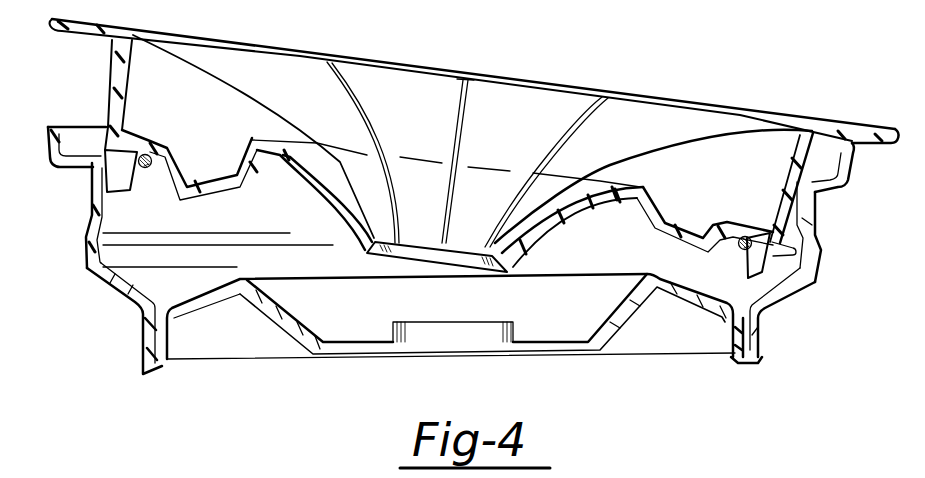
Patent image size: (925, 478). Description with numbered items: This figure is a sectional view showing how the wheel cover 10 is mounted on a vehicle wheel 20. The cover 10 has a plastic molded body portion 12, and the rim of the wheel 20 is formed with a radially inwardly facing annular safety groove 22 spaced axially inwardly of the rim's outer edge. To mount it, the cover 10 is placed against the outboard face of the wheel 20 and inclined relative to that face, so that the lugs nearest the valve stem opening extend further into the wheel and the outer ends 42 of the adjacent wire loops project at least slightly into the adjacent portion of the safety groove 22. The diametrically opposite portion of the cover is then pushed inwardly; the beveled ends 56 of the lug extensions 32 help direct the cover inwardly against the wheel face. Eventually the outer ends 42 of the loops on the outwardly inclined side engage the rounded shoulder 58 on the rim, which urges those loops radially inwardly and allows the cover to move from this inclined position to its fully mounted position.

The wheel cover 10 is at (636, 98).
The body portion 12 is at (433, 93).
The wheel 20 is at (780, 311).
The safety groove 22 is at (790, 270).
The axial extension 32 is at (118, 172).
The outer ends of loops 42 is at (98, 150).
The beveled ends 56 is at (106, 196).
The rounded shoulder 58 is at (90, 175).